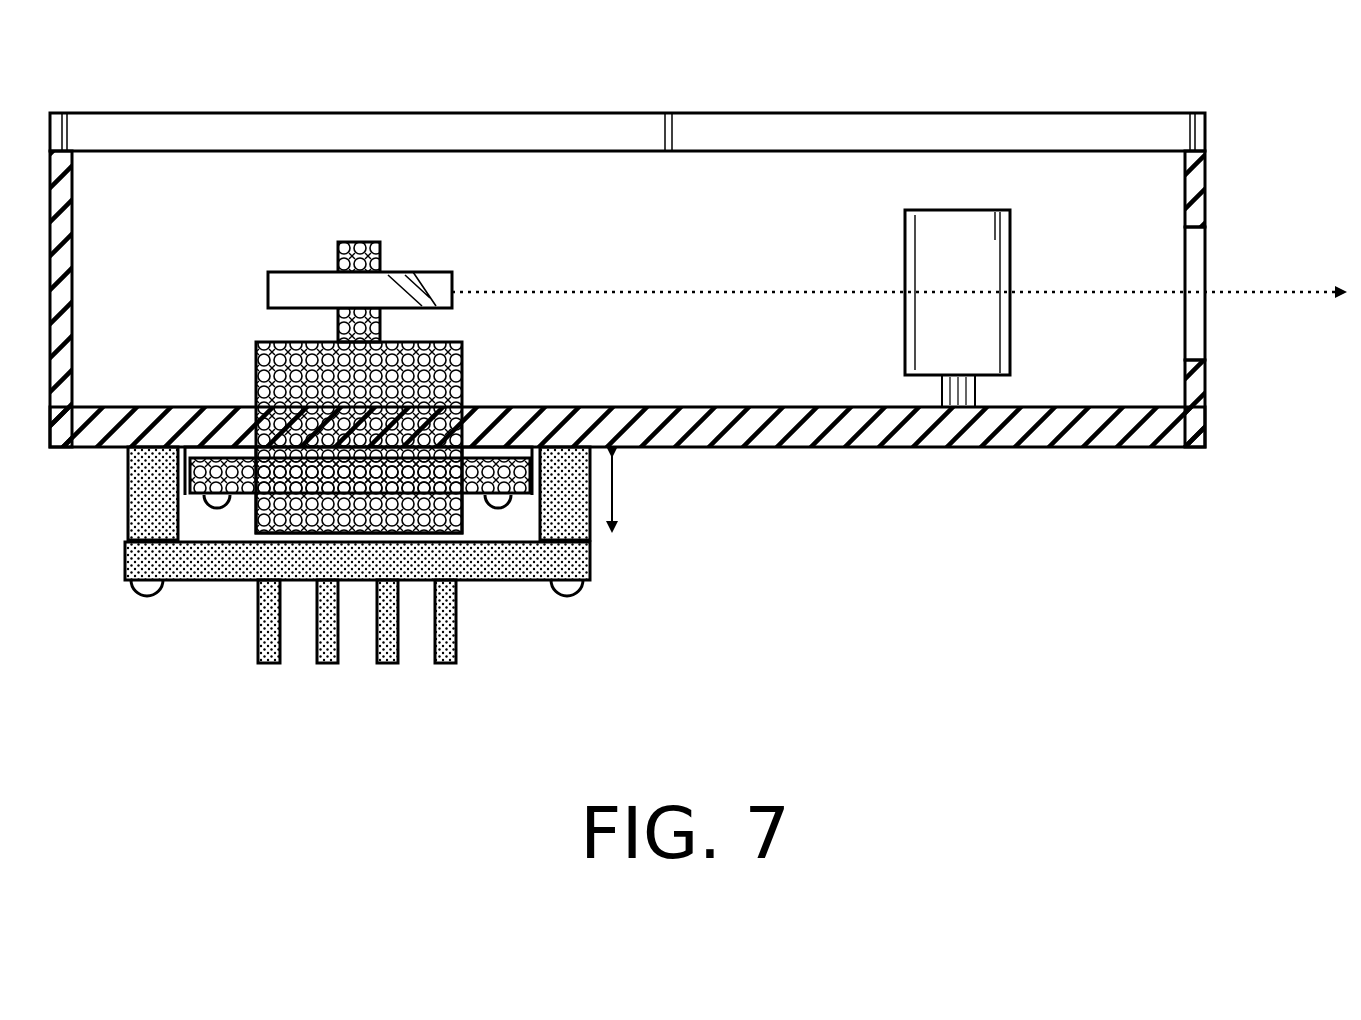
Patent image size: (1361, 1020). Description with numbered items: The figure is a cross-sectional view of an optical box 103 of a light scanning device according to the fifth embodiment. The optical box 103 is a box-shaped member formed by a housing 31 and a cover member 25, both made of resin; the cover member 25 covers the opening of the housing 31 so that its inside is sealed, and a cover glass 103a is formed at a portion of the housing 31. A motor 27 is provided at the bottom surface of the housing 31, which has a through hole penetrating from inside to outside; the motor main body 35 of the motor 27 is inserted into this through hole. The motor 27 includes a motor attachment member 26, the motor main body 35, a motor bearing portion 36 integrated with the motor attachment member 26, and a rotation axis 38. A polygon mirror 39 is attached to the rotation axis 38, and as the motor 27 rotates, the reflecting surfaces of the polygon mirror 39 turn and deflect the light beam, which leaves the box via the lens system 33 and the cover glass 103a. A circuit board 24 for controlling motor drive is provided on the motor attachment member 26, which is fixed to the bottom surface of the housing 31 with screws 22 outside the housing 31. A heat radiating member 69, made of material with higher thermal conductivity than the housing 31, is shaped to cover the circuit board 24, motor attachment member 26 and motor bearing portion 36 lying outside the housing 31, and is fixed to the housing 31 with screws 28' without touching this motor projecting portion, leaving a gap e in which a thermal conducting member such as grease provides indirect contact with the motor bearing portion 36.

The optical box 103 is at (705, 291).
The cover member 25 is at (697, 125).
The housing 31 is at (1052, 452).
The cover glass 103a is at (1193, 318).
The motor 27 is at (378, 365).
The motor main body 35 is at (275, 362).
The rotation axis 38 is at (338, 262).
The polygon mirror 39 is at (405, 280).
The lens system 33 is at (1010, 243).
The circuit board 24 is at (130, 460).
The motor attachment member 26 is at (245, 478).
The screws 22 is at (505, 505).
The screws 28' is at (405, 620).
The motor bearing portion 36 is at (372, 515).
The heat radiating member 69 is at (479, 620).
The gap dimension e is at (629, 493).